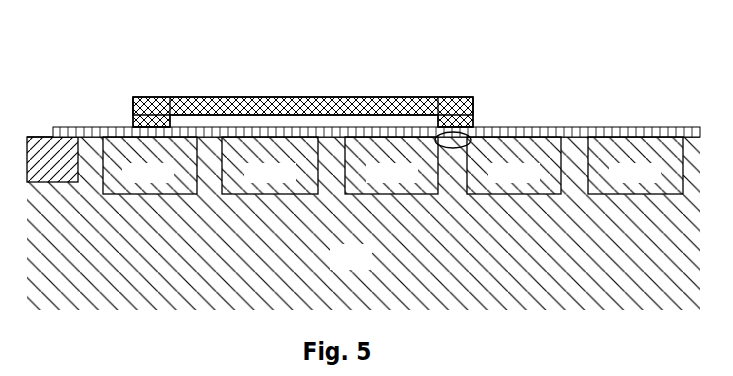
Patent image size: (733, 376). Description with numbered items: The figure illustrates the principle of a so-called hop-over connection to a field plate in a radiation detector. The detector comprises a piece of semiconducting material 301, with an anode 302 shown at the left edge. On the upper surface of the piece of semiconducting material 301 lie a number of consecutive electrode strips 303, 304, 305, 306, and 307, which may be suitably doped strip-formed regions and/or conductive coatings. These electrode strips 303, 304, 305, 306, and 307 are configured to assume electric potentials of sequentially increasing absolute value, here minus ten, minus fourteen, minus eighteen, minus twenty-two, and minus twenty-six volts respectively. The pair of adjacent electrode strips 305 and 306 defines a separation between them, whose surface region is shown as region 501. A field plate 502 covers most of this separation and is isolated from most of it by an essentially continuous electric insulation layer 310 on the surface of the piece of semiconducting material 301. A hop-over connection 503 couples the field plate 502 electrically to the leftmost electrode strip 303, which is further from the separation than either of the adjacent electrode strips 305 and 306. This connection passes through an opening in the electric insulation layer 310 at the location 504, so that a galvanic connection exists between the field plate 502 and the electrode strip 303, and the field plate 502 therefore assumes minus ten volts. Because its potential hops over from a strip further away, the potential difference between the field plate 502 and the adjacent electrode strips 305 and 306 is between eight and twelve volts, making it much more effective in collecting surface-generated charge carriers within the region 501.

The piece of semiconducting material 301 is at (335, 267).
The anode 302 is at (45, 148).
The electrode strip 303 is at (115, 147).
The electrode strip 304 is at (298, 147).
The electrode strip 305 is at (420, 147).
The electrode strip 306 is at (541, 147).
The electrode strip 307 is at (663, 147).
The electric insulation layer 310 is at (166, 100).
The surface region of the separation 501 is at (475, 130).
The field plate 502 is at (472, 127).
The hop-over connection 503 is at (217, 97).
The opening in the electric insulation layer 504 is at (132, 97).